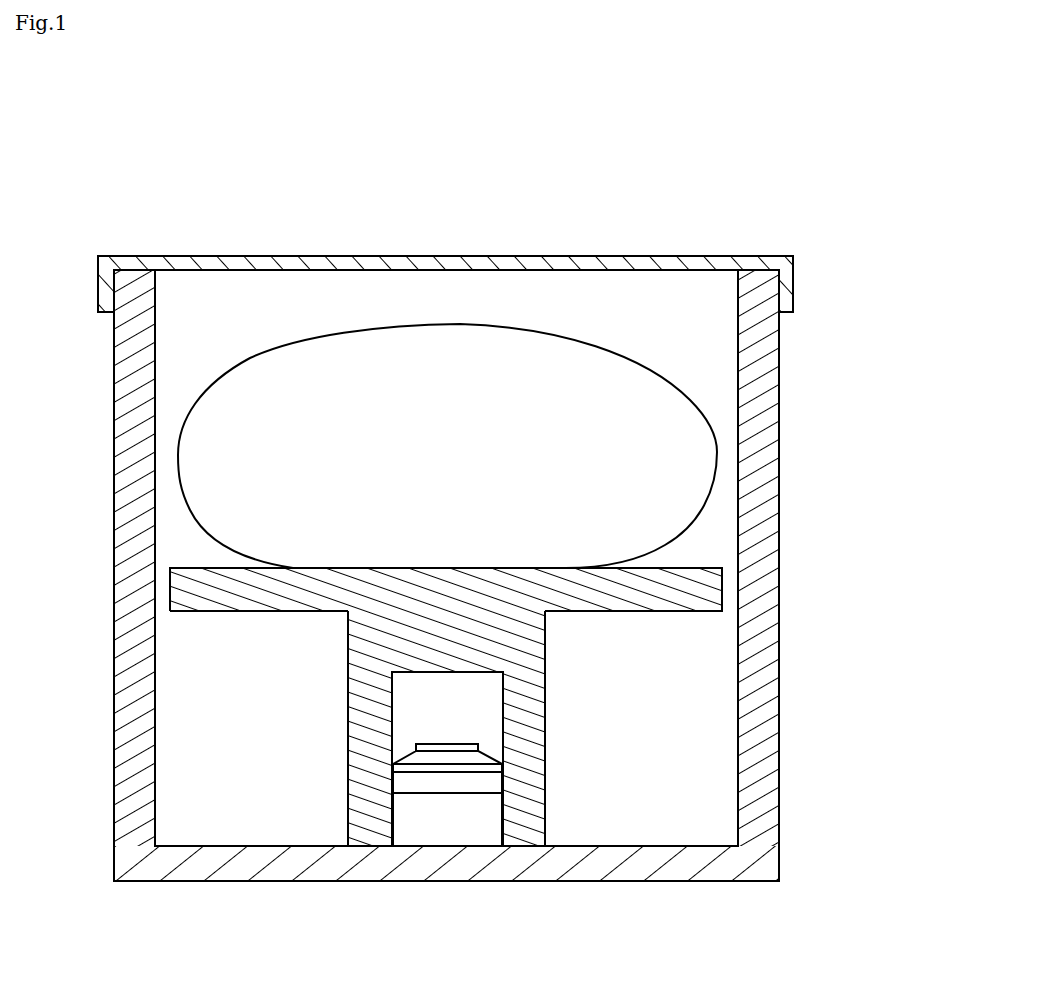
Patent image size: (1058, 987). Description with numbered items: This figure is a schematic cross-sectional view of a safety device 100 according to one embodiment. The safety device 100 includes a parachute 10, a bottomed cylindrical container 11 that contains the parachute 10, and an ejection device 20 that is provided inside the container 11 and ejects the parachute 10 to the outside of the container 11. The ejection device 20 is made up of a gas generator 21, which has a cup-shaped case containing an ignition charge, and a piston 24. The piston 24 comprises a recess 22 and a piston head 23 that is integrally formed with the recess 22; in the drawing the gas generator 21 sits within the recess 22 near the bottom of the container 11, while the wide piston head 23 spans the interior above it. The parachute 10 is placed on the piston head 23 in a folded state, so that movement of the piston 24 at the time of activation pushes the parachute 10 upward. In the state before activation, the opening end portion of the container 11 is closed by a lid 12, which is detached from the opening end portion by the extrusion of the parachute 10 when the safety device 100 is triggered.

The safety device 100 is at (118, 113).
The parachute 10 is at (520, 450).
The bottomed cylindrical container 11 is at (753, 394).
The lid 12 is at (673, 257).
The ejection device 20 is at (289, 775).
The gas generator 21 is at (445, 823).
The recess 22 is at (517, 715).
The piston head 23 is at (667, 607).
The piston 24 is at (551, 707).